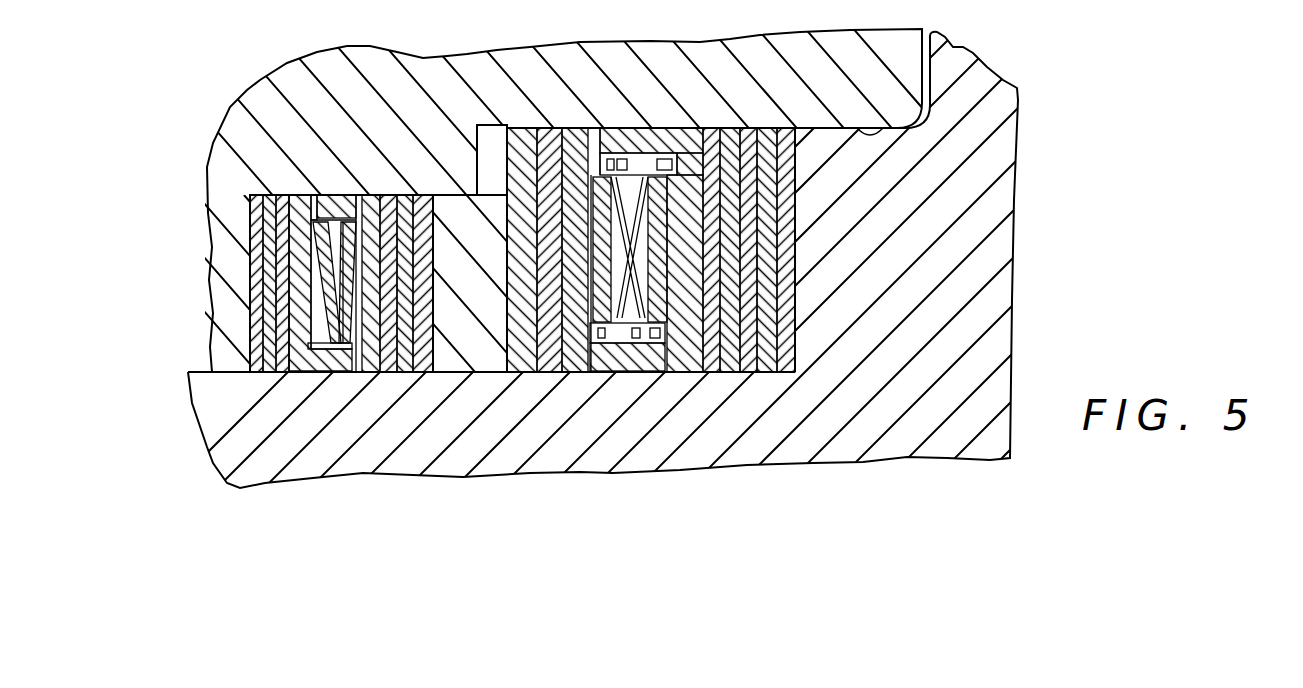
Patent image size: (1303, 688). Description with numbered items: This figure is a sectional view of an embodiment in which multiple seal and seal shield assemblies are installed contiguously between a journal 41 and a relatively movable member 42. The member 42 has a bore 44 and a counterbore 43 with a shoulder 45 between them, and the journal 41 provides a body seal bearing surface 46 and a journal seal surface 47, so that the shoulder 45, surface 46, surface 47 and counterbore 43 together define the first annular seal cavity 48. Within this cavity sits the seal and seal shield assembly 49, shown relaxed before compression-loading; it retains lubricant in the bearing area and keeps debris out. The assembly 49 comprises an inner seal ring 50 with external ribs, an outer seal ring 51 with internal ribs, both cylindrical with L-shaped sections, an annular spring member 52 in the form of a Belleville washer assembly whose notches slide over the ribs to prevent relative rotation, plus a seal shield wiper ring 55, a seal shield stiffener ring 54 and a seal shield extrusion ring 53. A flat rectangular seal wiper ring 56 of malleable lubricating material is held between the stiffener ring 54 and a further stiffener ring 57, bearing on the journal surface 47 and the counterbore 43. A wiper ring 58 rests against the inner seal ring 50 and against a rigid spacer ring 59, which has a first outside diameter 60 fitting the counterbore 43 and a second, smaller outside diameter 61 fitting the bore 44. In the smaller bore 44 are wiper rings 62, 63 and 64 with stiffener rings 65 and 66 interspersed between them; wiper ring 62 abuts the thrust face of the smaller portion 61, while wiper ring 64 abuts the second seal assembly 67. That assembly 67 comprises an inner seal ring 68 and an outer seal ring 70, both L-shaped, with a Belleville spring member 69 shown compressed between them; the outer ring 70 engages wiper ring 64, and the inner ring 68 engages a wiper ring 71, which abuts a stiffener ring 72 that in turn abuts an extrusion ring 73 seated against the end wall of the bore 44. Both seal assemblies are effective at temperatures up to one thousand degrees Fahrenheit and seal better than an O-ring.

The journal 41 is at (222, 462).
The relatively movable member 42 is at (265, 87).
The counterbore 43 is at (858, 127).
The bore 44 is at (437, 194).
The shoulder 45 is at (478, 126).
The body seal bearing surface 46 is at (795, 258).
The journal seal surface 47 is at (510, 370).
The first annular seal cavity 48 is at (660, 370).
The seal and seal shield assembly 49 is at (615, 124).
The inner seal ring 50 is at (578, 370).
The outer seal ring 51 is at (666, 136).
The annular spring member 52 is at (640, 346).
The seal shield extrusion ring 53 is at (800, 343).
The seal shield stiffener ring 54 is at (737, 133).
The seal shield wiper ring 55 is at (712, 370).
The seal wiper ring 56 is at (752, 370).
The stiffener ring 57 is at (768, 356).
The wiper ring 58 is at (543, 127).
The spacer ring 59 is at (466, 375).
The first outside diameter 60 is at (483, 125).
The second outside diameter 61 is at (443, 194).
The wiper ring 62 is at (406, 357).
The wiper ring 63 is at (408, 375).
The wiper ring 64 is at (372, 375).
The stiffener ring 65 is at (395, 193).
The stiffener ring 66 is at (363, 193).
The second seal assembly 67 is at (292, 192).
The inner seal ring 68 is at (298, 375).
The Belleville spring member 69 is at (300, 357).
The outer seal ring 70 is at (358, 194).
The wiper ring 71 is at (300, 193).
The stiffener ring 72 is at (266, 357).
The extrusion ring 73 is at (250, 342).